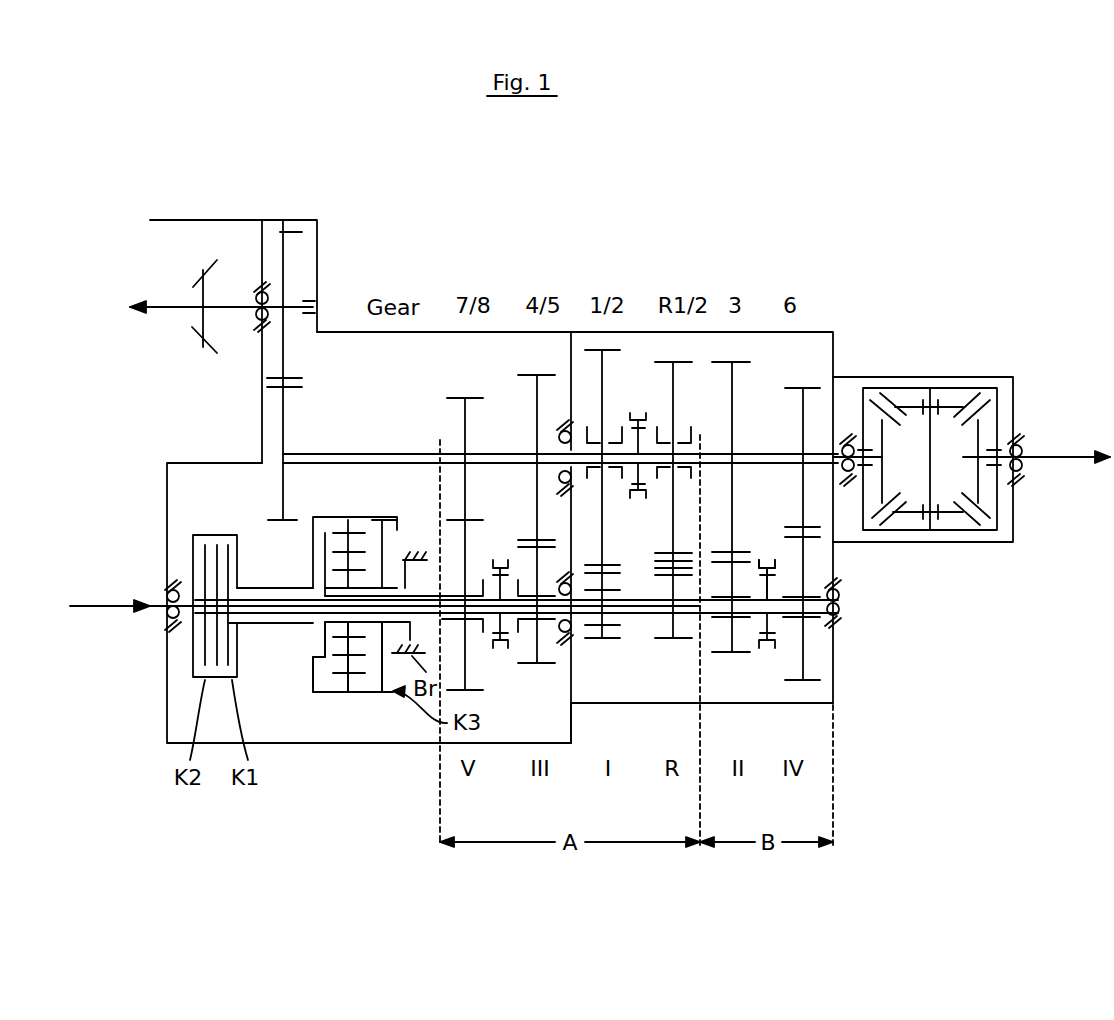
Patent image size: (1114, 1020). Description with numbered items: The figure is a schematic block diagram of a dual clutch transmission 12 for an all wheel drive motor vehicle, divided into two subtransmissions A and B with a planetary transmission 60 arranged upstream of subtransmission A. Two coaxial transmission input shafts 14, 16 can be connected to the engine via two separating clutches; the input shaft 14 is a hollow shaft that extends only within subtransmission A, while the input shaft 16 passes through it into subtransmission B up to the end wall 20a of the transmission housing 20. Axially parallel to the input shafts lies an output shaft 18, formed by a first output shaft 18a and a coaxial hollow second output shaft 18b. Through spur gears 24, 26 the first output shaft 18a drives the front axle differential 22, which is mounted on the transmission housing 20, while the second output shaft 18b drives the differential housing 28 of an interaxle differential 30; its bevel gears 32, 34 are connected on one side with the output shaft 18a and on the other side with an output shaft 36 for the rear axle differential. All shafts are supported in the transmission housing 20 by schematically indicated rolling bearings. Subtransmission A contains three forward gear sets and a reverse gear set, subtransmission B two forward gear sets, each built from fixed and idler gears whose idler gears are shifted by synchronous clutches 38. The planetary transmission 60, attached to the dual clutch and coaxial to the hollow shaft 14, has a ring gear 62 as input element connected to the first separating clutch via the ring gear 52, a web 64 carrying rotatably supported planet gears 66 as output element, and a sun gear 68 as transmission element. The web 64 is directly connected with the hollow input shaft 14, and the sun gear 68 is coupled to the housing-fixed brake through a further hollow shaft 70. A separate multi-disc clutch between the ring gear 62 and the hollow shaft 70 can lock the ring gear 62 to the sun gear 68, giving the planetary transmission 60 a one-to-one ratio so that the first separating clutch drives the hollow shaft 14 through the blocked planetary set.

The dual clutch transmission 12 is at (842, 252).
The transmission input shaft 14 is at (637, 597).
The transmission input shaft 16 is at (777, 605).
The output shaft 18 is at (397, 452).
The first output shaft 18a is at (418, 450).
The second output shaft 18b is at (762, 452).
The transmission housing 20 is at (827, 327).
The end wall 20a is at (836, 652).
The front axle differential 22 is at (194, 260).
The spur gear 24 is at (283, 410).
The spur gear 26 is at (288, 270).
The differential housing 28 is at (863, 397).
The interaxle differential 30 is at (982, 370).
The bevel gear 32 is at (895, 480).
The bevel gear 34 is at (977, 433).
The output shaft 36 is at (1050, 462).
The synchronous clutch 38 is at (638, 400).
The ring gear 52 is at (258, 625).
The planetary transmission 60 is at (317, 712).
The ring gear 62 is at (310, 688).
The web 64 is at (313, 652).
The planet gears 66 is at (338, 692).
The sun gear 68 is at (373, 692).
The hollow shaft 70 is at (383, 585).